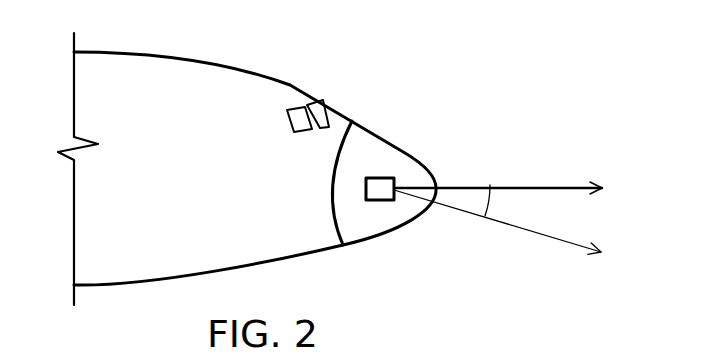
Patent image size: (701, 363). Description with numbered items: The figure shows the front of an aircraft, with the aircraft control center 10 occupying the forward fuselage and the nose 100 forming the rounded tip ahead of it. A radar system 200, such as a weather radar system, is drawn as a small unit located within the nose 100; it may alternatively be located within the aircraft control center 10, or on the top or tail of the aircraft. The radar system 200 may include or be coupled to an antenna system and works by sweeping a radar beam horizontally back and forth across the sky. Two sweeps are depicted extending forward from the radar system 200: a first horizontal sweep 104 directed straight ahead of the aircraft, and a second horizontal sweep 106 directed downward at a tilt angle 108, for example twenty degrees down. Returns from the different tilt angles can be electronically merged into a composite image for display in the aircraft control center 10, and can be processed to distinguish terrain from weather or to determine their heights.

The aircraft control center 10 is at (124, 67).
The nose 100 is at (358, 142).
The radar system 200 is at (380, 190).
The first horizontal sweep 104 is at (573, 187).
The second horizontal sweep 106 is at (537, 233).
The tilt angle 108 is at (497, 187).